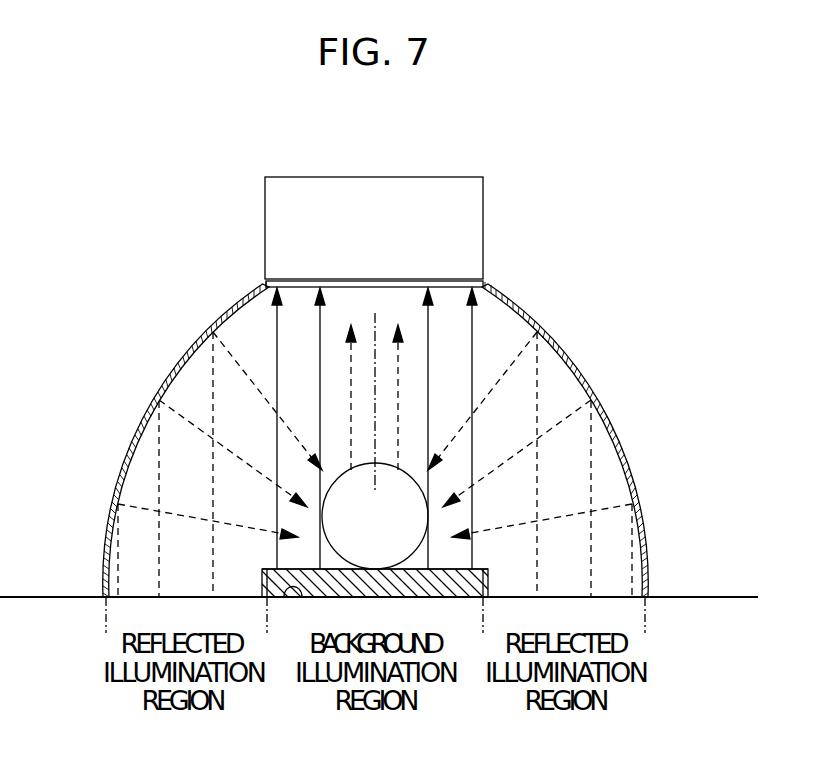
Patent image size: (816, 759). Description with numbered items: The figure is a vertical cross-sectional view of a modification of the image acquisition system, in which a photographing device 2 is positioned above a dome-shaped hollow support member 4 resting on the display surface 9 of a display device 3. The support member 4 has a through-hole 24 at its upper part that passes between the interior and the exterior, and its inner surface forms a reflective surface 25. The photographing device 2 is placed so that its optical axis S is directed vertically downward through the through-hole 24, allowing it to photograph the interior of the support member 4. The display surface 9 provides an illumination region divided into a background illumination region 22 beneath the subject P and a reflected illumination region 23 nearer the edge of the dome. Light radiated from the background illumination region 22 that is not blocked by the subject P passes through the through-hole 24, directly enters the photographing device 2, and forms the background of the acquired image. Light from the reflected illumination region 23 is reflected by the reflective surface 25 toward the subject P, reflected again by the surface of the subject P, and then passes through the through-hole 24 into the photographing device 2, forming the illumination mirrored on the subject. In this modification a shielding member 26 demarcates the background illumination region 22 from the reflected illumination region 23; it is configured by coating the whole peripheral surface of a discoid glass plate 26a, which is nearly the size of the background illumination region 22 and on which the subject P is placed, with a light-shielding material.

The photographing device 2 is at (258, 222).
The display device 3 is at (41, 585).
The support member 4 is at (132, 403).
The display surface 9 is at (733, 596).
The background illumination region 22 is at (291, 598).
The reflected illumination region 23 is at (614, 597).
The through-hole 24 is at (467, 283).
The reflective surface 25 is at (570, 362).
The shielding member 26 is at (490, 583).
The discoid glass plate 26a is at (440, 569).
The subject P is at (331, 552).
The optical axis S is at (376, 304).